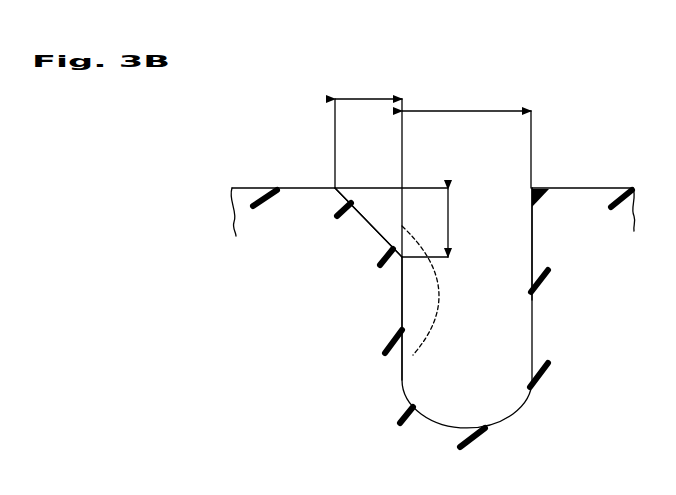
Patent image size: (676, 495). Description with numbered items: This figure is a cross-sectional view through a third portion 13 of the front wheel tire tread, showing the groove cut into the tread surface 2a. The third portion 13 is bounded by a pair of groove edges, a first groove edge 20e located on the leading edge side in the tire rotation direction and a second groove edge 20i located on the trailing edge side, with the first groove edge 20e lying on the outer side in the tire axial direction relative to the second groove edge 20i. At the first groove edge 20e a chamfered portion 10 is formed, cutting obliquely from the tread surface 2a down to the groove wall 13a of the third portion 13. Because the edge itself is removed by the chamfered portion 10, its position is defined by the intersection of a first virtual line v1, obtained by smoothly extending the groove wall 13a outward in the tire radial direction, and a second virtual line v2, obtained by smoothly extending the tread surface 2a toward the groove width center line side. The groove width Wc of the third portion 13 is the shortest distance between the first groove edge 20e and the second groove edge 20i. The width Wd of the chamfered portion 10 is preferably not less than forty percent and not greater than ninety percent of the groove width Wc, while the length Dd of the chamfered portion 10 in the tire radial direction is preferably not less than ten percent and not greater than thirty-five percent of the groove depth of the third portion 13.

The tread surface 2a is at (254, 188).
The third portion 13 is at (553, 86).
The chamfered portion 10 is at (381, 224).
The groove wall 13a is at (402, 275).
The first groove edge 20e is at (402, 188).
The second groove edge 20i is at (533, 188).
The width of the chamfered portion Wd is at (368, 133).
The groove width Wc is at (466, 140).
The length in the tire radial direction of the chamfered portion Dd is at (448, 223).
The first virtual line v1 is at (413, 355).
The second virtual line v2 is at (375, 188).